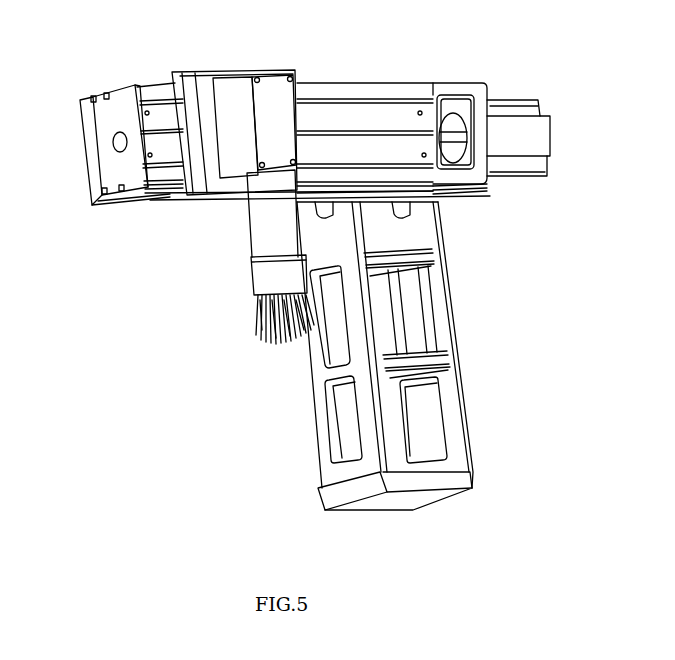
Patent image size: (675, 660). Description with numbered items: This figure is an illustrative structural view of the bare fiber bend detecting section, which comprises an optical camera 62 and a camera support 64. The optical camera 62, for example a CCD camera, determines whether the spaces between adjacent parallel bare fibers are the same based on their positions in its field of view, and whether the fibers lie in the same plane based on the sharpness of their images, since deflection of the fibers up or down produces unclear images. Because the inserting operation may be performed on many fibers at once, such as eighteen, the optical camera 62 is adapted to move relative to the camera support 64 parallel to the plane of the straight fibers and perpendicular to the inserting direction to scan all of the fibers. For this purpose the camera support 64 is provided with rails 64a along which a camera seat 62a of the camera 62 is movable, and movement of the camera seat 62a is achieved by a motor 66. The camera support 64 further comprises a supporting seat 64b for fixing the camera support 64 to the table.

The optical camera 62 is at (270, 278).
The camera seat 62a is at (193, 88).
The camera support 64 is at (92, 201).
The rails 64a is at (355, 113).
The supporting seat 64b is at (445, 368).
The motor 66 is at (540, 137).